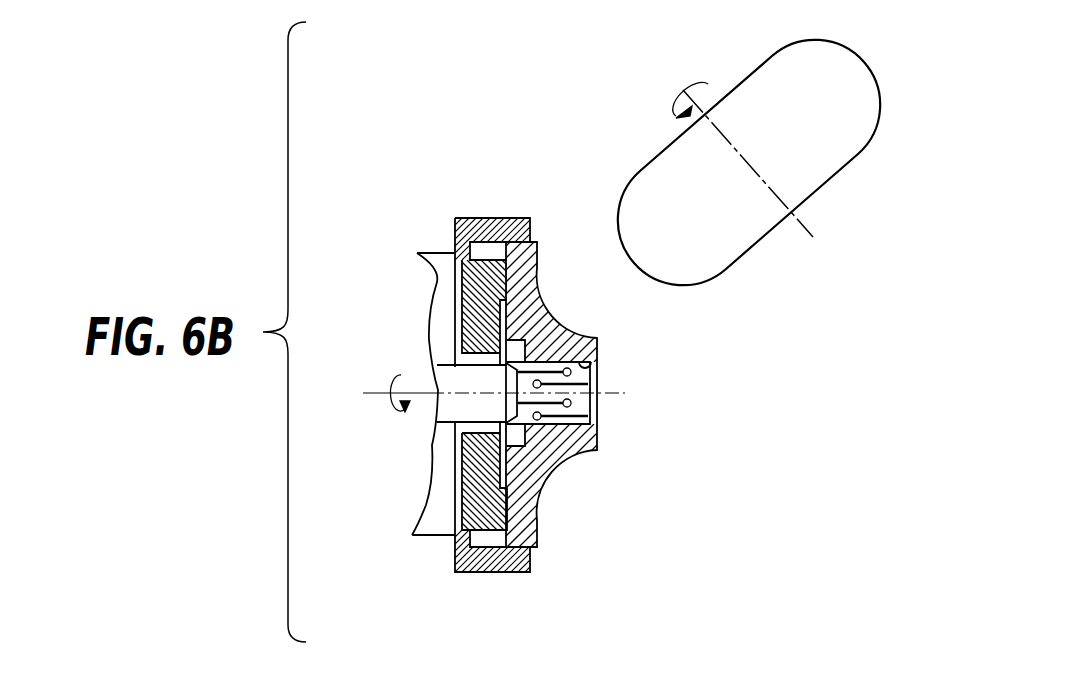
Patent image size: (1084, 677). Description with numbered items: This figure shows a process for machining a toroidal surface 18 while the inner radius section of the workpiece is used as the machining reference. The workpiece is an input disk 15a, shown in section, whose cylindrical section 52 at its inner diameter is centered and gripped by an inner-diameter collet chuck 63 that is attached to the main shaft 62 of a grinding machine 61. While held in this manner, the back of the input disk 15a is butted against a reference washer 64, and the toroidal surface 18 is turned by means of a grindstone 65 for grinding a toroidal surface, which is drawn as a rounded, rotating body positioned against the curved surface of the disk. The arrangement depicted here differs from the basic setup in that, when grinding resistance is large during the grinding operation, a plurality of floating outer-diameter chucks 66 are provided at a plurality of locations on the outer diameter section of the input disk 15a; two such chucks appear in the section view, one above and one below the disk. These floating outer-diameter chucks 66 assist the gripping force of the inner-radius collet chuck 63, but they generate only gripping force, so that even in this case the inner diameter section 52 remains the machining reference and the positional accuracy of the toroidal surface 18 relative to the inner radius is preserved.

The input disk 15a is at (543, 468).
The toroidal surface 18 is at (566, 312).
The cylindrical section 52 is at (594, 367).
The grinding machine 61 is at (437, 275).
The main shaft 62 is at (437, 410).
The inner-diameter collet chuck 63 is at (580, 405).
The reference washer 64 is at (473, 512).
The grindstone 65 is at (838, 73).
The floating outer-diameter chuck 66 is at (497, 218).